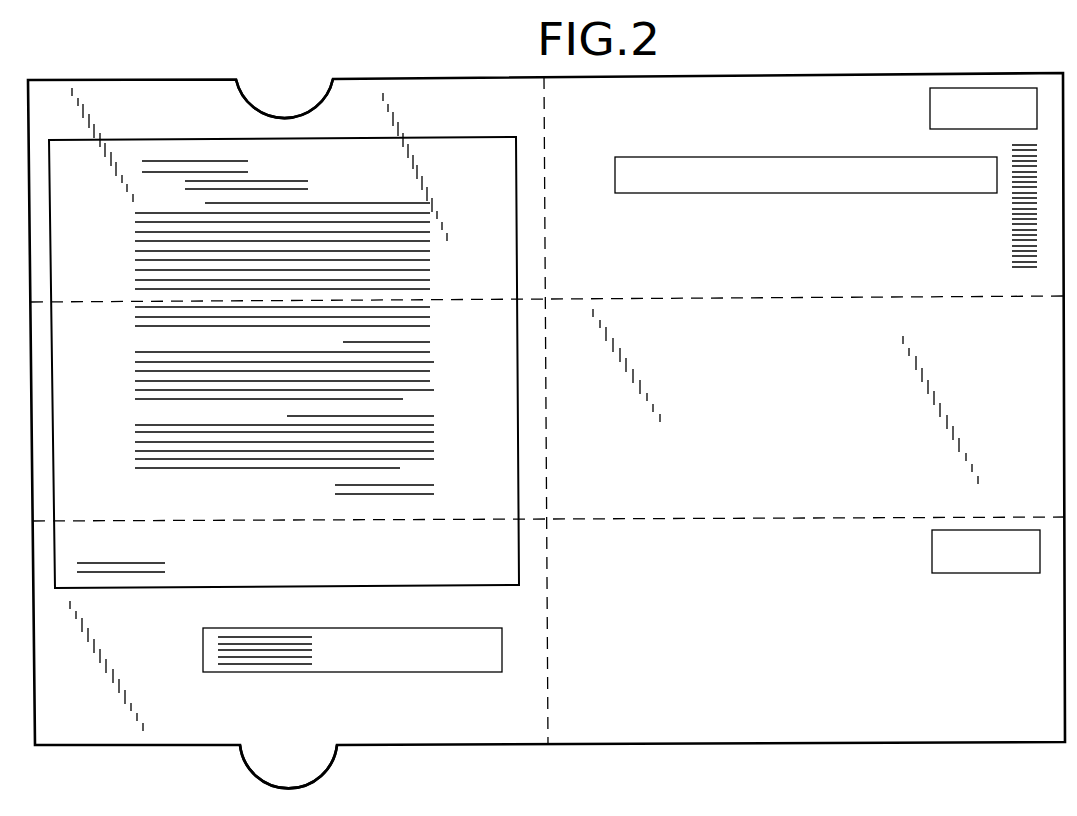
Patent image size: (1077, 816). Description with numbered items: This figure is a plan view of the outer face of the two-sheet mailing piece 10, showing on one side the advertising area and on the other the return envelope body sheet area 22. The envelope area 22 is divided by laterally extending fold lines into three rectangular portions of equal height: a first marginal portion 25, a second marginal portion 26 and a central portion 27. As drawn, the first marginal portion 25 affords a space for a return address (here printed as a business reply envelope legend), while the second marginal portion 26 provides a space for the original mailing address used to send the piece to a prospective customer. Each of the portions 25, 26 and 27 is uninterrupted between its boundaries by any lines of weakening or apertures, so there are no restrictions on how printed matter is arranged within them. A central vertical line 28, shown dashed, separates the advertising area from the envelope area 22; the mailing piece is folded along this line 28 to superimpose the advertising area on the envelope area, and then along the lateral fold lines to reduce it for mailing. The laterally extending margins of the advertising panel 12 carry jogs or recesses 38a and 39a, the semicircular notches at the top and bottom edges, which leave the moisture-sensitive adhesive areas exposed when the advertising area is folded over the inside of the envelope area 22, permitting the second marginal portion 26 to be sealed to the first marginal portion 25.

The mailing envelope 10 is at (34, 70).
The front panel with window 12 is at (472, 50).
The return envelope body sheet area 22 is at (846, 73).
The first marginal portion 25 is at (667, 131).
The second marginal portion 26 is at (857, 593).
The central portion 27 is at (707, 468).
The central vertical line 28 is at (547, 715).
The jog 38a is at (258, 92).
The jog 39a is at (283, 727).